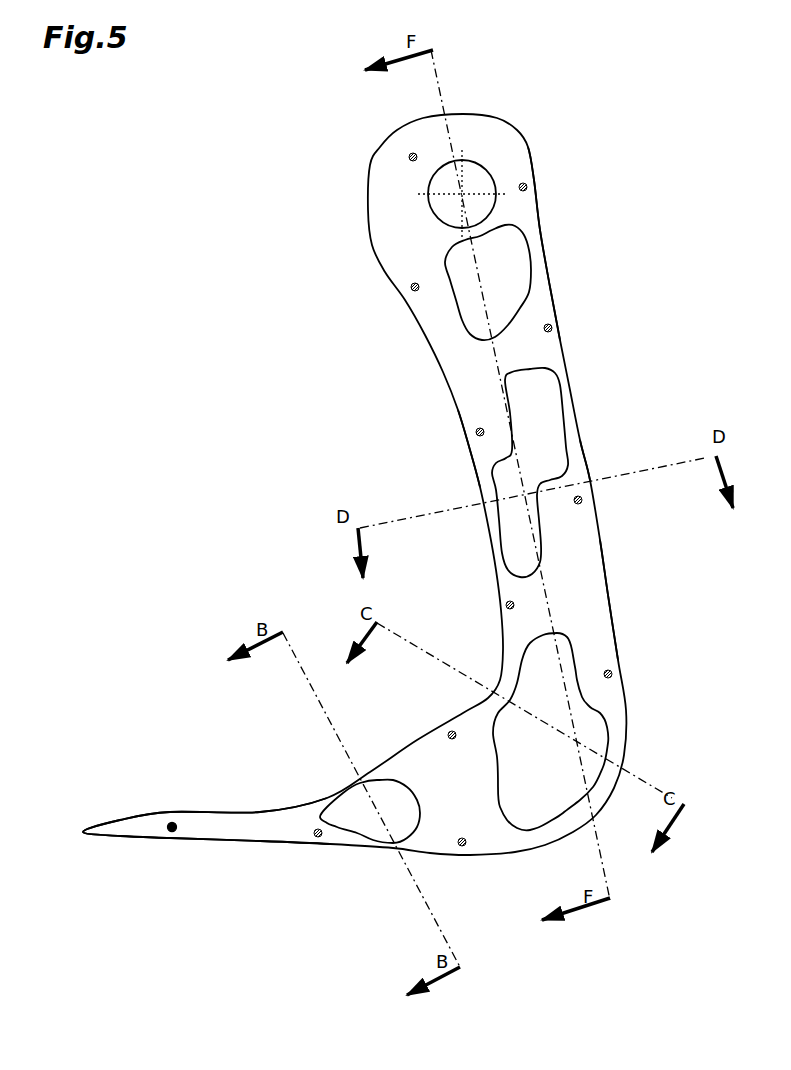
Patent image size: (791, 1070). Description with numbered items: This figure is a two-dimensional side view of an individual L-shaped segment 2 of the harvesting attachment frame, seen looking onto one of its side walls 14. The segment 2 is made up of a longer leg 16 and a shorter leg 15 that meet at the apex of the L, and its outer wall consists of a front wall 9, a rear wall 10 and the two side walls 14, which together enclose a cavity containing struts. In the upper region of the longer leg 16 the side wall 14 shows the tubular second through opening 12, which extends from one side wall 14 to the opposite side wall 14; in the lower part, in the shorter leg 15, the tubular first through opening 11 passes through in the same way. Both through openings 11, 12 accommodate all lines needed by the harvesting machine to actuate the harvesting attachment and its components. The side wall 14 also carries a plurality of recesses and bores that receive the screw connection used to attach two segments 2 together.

The segment 2 is at (318, 378).
The front wall 9 is at (468, 462).
The rear wall 10 is at (585, 449).
The first through opening 11 is at (368, 833).
The second through opening 12 is at (474, 181).
The side wall 14 is at (582, 590).
The shorter leg 15 is at (277, 790).
The longer leg 16 is at (596, 315).